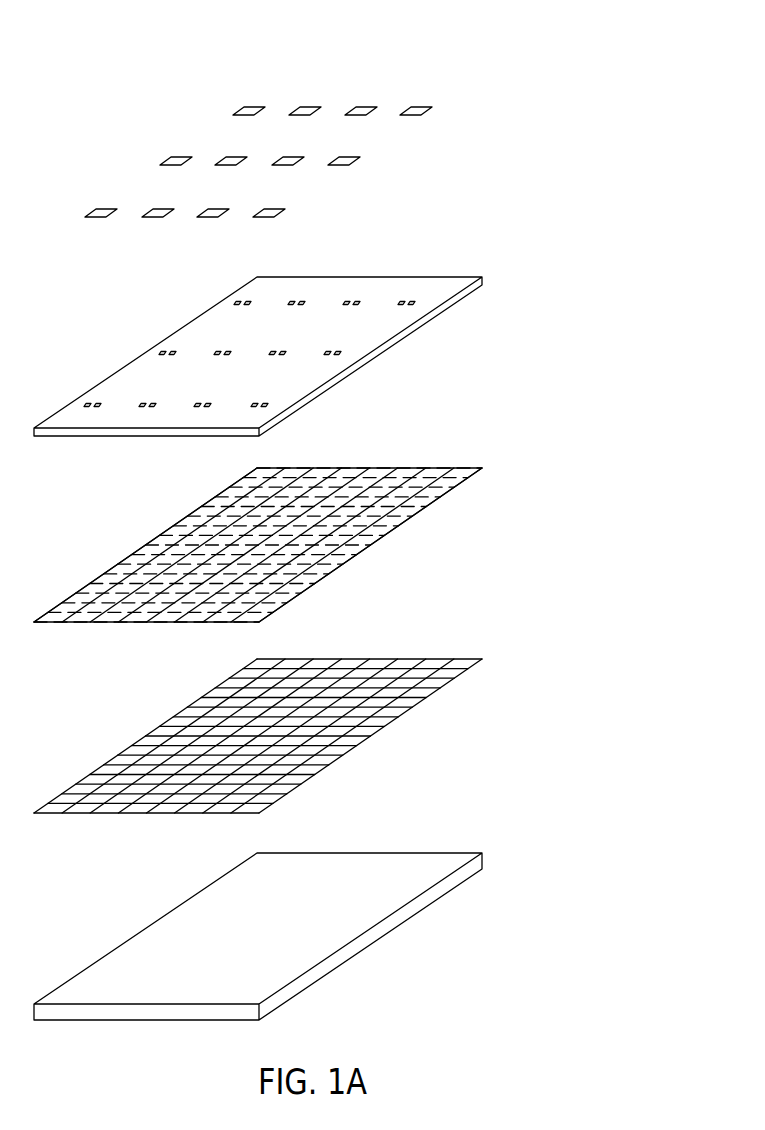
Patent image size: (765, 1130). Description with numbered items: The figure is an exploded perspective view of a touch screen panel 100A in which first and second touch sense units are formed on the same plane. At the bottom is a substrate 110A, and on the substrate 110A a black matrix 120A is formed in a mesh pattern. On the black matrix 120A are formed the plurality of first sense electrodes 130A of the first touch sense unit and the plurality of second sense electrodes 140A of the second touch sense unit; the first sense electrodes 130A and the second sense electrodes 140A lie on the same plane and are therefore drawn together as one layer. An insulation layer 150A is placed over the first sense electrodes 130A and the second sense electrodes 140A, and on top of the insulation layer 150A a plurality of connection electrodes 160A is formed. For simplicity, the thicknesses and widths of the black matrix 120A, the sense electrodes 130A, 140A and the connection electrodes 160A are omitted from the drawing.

The touch screen panel 100A is at (603, 38).
The substrate 110A is at (482, 853).
The black matrix 120A is at (482, 659).
The first sense electrodes 130A is at (493, 468).
The second sense electrodes 140A is at (258, 545).
The insulation layer 150A is at (482, 277).
The connection electrodes 160A is at (470, 112).